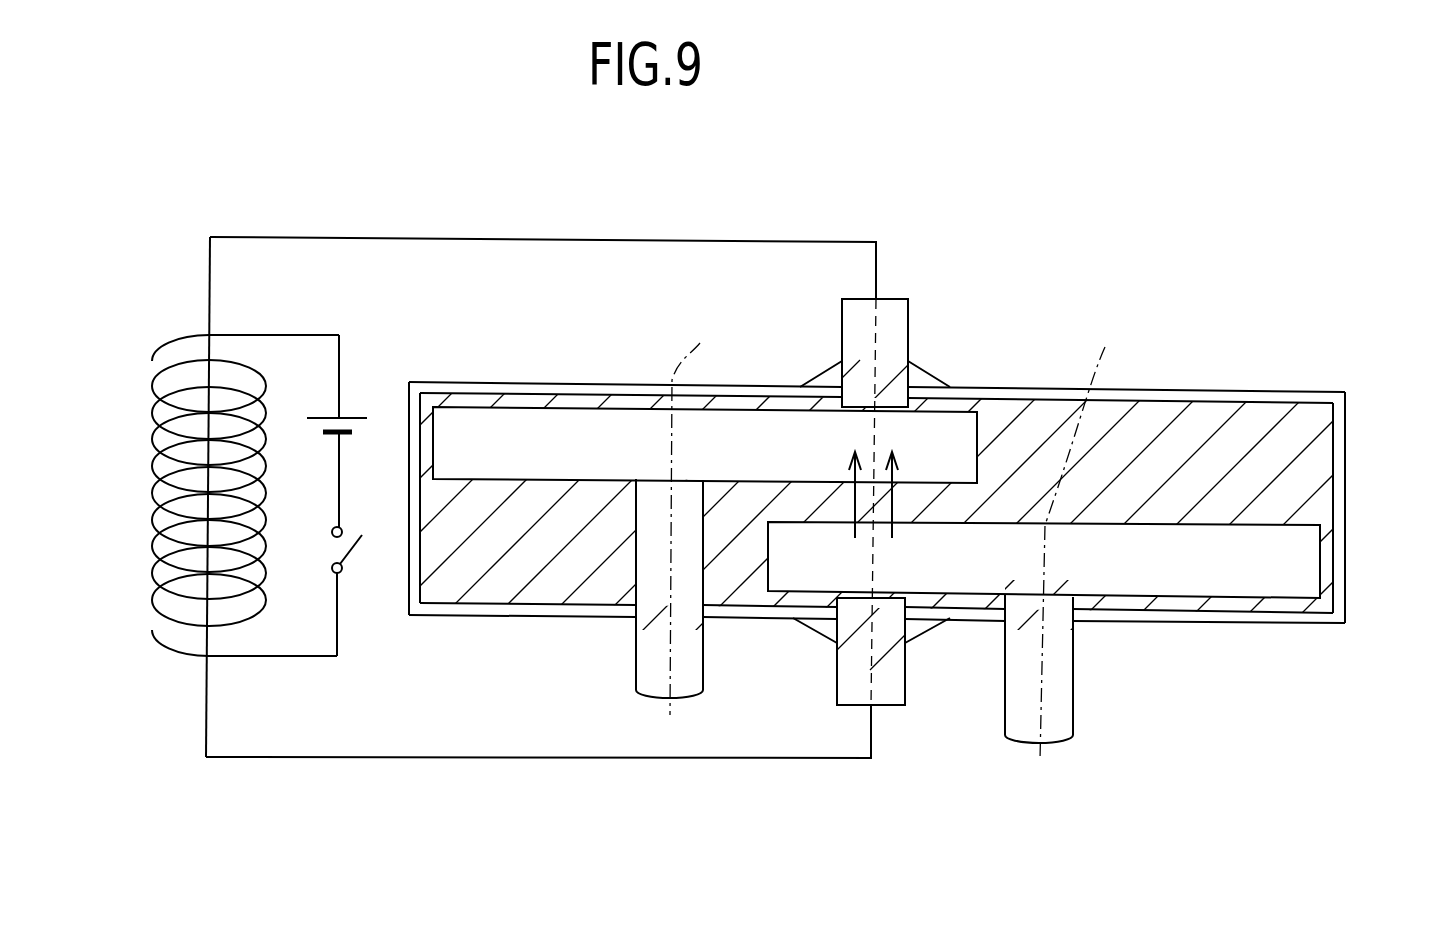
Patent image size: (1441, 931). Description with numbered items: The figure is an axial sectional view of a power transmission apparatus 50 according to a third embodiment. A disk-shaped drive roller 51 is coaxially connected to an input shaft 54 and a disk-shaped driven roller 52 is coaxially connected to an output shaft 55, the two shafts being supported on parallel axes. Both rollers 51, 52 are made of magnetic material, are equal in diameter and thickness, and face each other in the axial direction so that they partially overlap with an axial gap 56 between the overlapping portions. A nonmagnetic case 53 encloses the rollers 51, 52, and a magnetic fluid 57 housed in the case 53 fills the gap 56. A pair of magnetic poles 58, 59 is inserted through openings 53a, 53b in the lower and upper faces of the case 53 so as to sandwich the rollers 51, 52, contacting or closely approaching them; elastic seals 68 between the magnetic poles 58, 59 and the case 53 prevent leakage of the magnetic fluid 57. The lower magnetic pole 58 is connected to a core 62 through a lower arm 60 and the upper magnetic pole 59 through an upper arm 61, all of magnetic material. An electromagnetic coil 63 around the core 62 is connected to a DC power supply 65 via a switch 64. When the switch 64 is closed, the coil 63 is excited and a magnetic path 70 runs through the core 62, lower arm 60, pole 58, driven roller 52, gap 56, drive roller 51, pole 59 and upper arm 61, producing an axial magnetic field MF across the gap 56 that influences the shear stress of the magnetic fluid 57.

The power transmission apparatus 50 is at (808, 475).
The drive roller 51 is at (533, 428).
The driven roller 52 is at (1235, 588).
The case 53 is at (1235, 388).
The opening 53a is at (817, 612).
The opening 53b is at (820, 382).
The input shaft 54 is at (637, 648).
The output shaft 55 is at (1065, 660).
The gap 56 is at (940, 507).
The magnetic fluid 57 is at (1305, 476).
The magnetic pole 58 is at (893, 685).
The magnetic pole 59 is at (896, 320).
The lower arm 60 is at (545, 760).
The upper arm 61 is at (548, 237).
The core 62 is at (206, 704).
The electromagnetic coil 63 is at (167, 347).
The switch 64 is at (352, 555).
The DC power supply 65 is at (364, 418).
The seal 68 is at (925, 375).
The magnetic path 70 is at (868, 678).